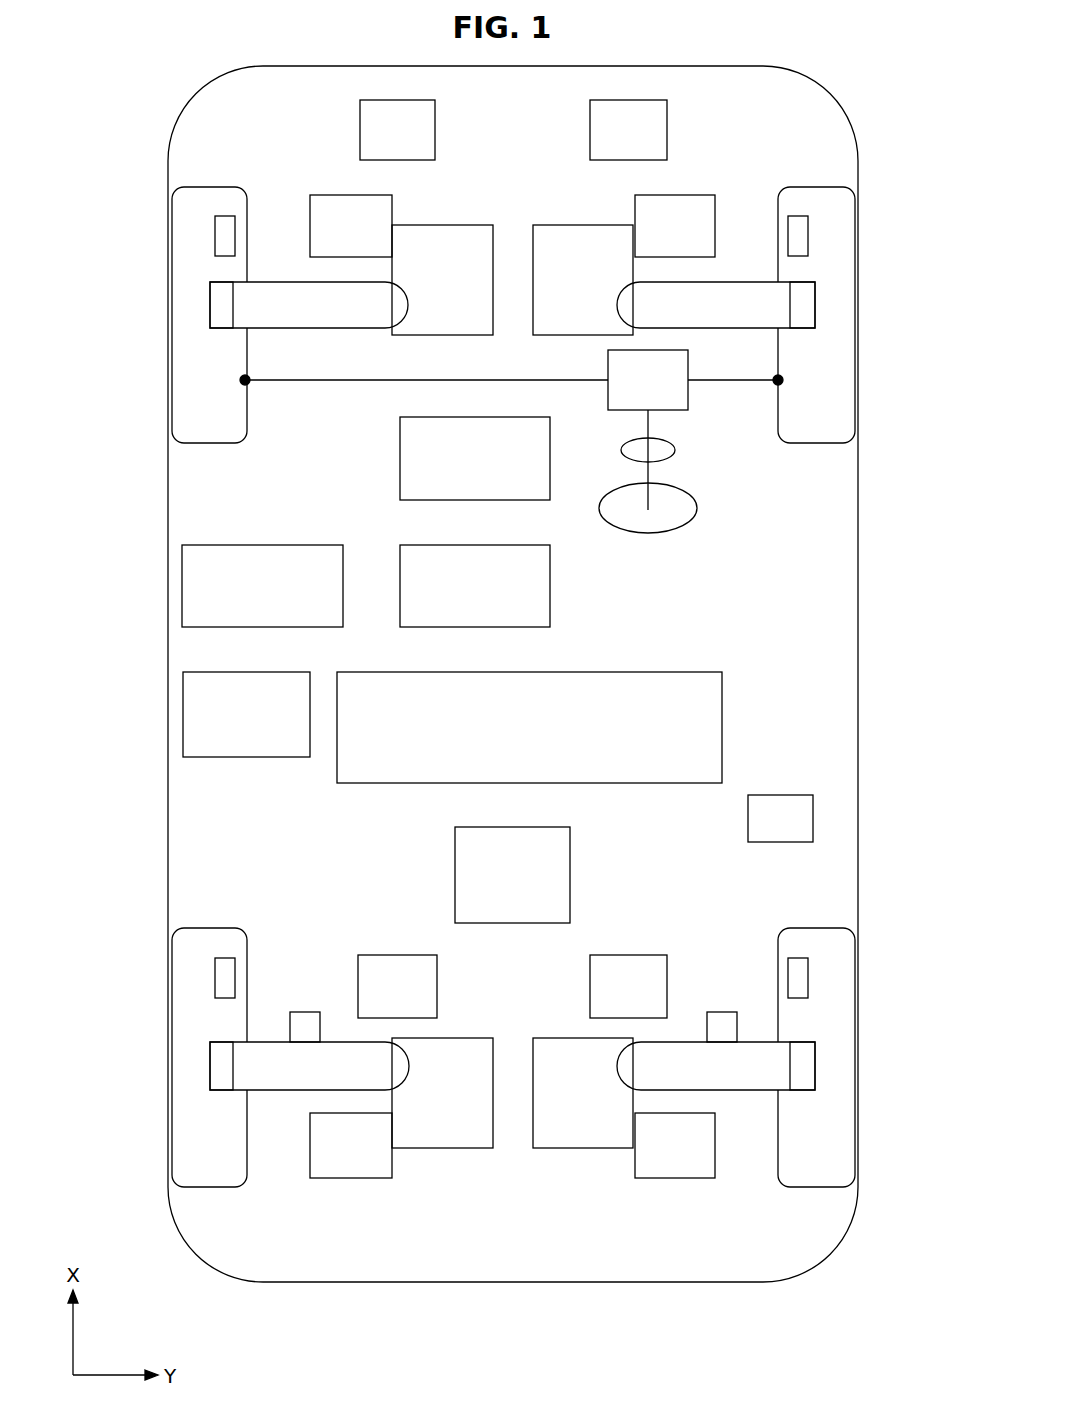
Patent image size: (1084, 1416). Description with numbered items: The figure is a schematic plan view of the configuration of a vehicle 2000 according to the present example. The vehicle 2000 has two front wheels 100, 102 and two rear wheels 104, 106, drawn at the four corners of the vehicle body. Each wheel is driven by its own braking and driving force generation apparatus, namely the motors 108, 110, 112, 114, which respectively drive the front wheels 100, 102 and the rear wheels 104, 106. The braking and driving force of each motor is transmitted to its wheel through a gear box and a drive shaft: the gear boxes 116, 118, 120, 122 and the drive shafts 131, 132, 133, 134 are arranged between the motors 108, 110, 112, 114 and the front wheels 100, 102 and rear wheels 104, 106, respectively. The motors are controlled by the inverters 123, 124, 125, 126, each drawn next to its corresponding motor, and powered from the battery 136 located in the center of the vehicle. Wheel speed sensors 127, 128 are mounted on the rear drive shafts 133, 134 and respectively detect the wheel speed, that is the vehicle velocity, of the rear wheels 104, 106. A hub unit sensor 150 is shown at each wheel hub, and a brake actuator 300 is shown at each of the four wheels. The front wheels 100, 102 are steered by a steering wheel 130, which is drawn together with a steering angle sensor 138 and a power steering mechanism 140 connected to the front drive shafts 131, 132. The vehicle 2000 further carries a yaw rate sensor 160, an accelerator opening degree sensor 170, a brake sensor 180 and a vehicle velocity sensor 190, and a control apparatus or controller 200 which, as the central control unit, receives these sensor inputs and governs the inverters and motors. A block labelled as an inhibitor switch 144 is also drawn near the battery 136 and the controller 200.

The vehicle 2000 is at (717, 1349).
The front wheel 100 is at (182, 246).
The front wheel 102 is at (845, 247).
The rear wheel 104 is at (180, 1140).
The rear wheel 106 is at (845, 1128).
The braking and driving force generation apparatus (motor) 108 is at (338, 195).
The braking and driving force generation apparatus (motor) 110 is at (682, 195).
The braking and driving force generation apparatus (motor) 112 is at (352, 1178).
The braking and driving force generation apparatus (motor) 114 is at (680, 1178).
The gear box 116 is at (440, 225).
The gear box 118 is at (580, 225).
The gear box 120 is at (470, 1038).
The gear box 122 is at (555, 1038).
The inverter 123 is at (435, 115).
The inverter 124 is at (590, 145).
The inverter 125 is at (395, 955).
The inverter 126 is at (626, 955).
The wheel speed sensor 127 is at (303, 1012).
The wheel speed sensor 128 is at (722, 1012).
The steering wheel 130 is at (697, 507).
The drive shaft 131 is at (278, 292).
The drive shaft 132 is at (748, 292).
The drive shaft 133 is at (278, 1082).
The drive shaft 134 is at (751, 1082).
The battery 136 is at (722, 727).
The steering angle sensor 138 is at (675, 448).
The power steering mechanism 140 is at (688, 395).
The inhibitor switch 144 is at (748, 818).
The hub unit sensor 150 is at (217, 302).
The yaw rate sensor 160 is at (450, 417).
The accelerator opening degree sensor 170 is at (450, 545).
The brake sensor 180 is at (250, 545).
The vehicle velocity sensor 190 is at (215, 672).
The control apparatus (controller) 200 is at (572, 855).
The brake actuator 300 is at (224, 215).